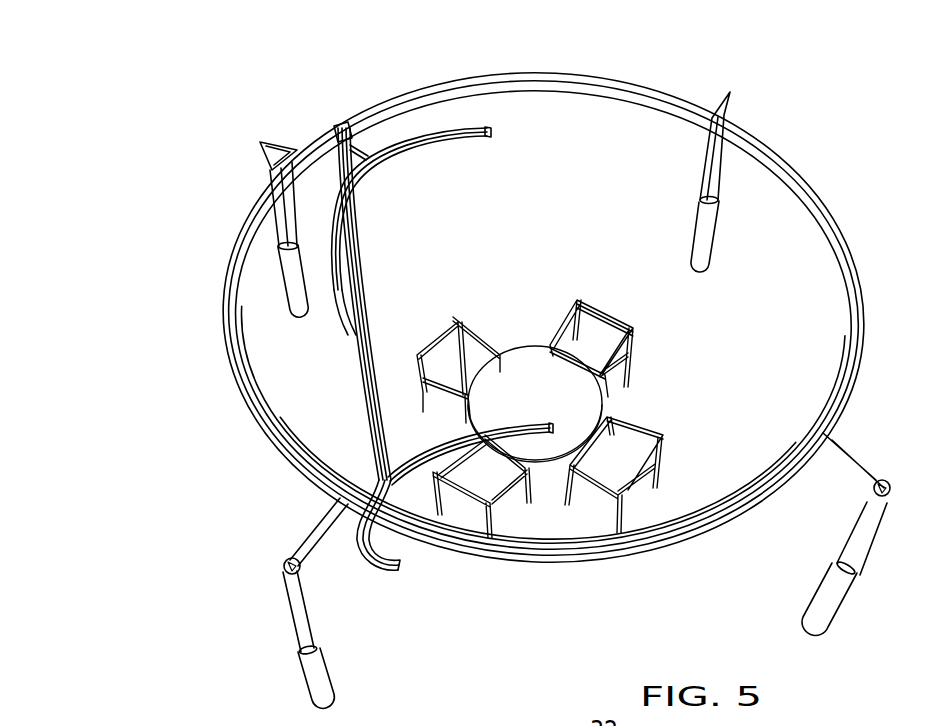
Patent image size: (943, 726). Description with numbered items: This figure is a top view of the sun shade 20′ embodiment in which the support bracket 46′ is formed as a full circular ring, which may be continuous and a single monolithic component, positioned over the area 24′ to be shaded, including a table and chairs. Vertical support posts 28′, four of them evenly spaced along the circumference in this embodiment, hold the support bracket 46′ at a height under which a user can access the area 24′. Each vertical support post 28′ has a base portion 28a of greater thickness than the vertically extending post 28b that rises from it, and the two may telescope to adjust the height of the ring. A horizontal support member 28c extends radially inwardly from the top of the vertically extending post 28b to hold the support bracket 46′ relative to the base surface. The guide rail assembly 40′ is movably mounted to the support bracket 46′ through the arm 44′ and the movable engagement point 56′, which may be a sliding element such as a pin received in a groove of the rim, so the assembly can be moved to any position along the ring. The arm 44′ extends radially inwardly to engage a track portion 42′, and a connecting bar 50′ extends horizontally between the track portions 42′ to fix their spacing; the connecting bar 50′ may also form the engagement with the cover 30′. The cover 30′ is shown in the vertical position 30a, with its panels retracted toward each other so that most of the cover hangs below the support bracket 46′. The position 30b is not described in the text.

The sun shade 20′ is at (198, 297).
The vertical position 30a is at (372, 394).
The movable engagement point 56′ is at (337, 124).
The arm 44′ is at (343, 148).
The track portion 42′ is at (455, 128).
The guide rail assembly 40′ is at (336, 216).
The connecting bar 50′ is at (338, 198).
The support bracket 46′ is at (787, 165).
The area to be shaded 24′ is at (375, 392).
The cover 30′ is at (400, 412).
The vertical support post 28′ is at (255, 606).
The base portion 28a is at (320, 682).
The vertically extending post 28b is at (287, 582).
The horizontal support member 28c is at (293, 557).
The second support arm 30b is at (464, 720).